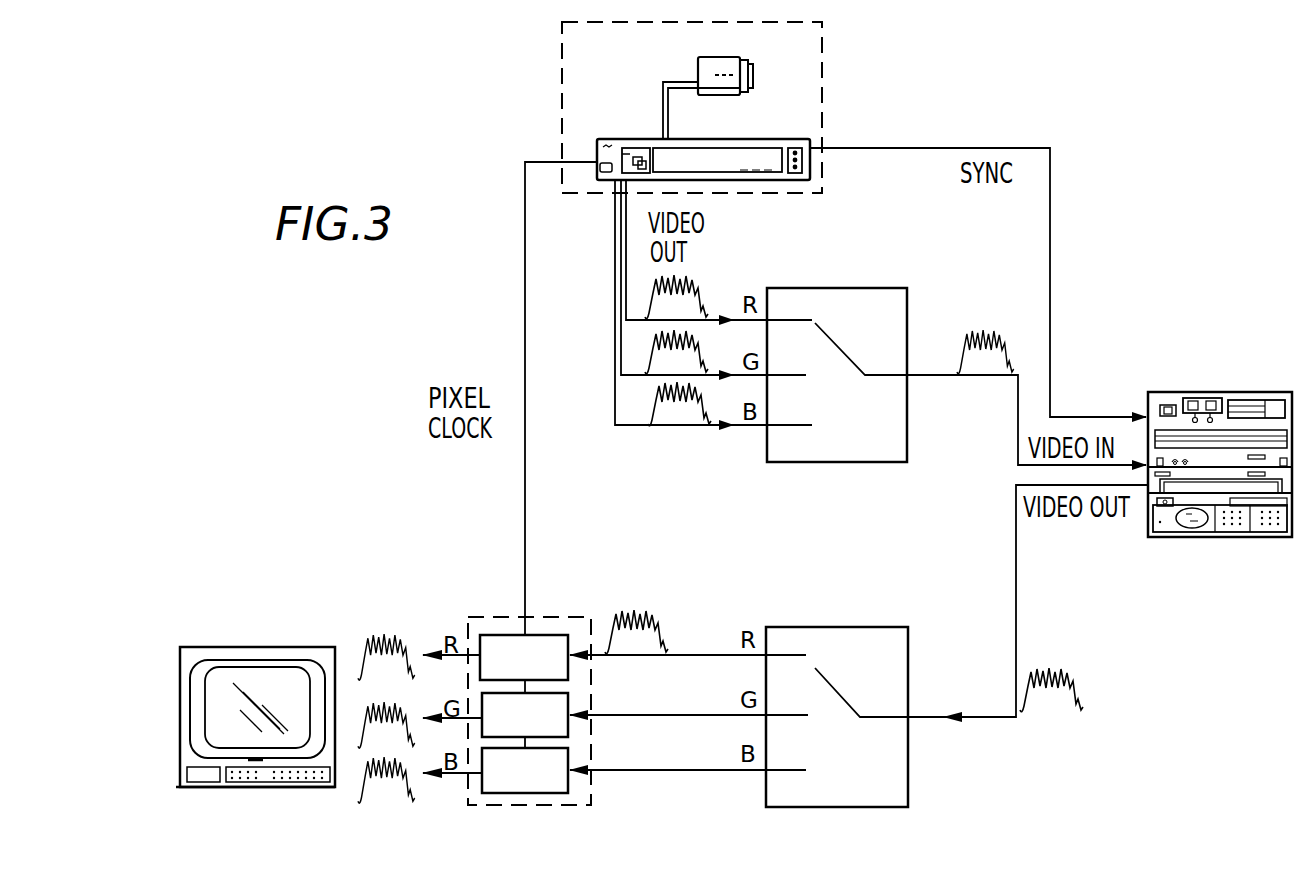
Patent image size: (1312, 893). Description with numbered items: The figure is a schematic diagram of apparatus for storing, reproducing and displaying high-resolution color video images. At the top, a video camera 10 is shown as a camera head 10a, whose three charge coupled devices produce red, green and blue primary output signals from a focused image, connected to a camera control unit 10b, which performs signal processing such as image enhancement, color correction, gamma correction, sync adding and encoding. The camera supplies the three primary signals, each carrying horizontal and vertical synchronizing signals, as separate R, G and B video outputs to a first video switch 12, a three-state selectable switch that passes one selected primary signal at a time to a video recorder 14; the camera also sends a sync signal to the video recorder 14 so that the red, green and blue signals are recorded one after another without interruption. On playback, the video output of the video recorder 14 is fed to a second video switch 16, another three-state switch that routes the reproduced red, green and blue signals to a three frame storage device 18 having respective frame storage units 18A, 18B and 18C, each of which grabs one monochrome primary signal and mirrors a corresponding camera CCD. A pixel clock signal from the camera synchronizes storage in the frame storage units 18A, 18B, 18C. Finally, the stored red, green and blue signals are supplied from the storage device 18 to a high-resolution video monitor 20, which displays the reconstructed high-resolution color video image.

The video camera 10 is at (822, 38).
The camera head 10a is at (712, 55).
The camera control unit 10b is at (728, 139).
The first video switch 12 is at (790, 288).
The video recorder 14 is at (1208, 392).
The second video switch 16 is at (823, 627).
The three frame storage device 18 is at (514, 749).
The frame storage unit 18A is at (524, 657).
The frame storage unit 18B is at (525, 715).
The frame storage unit 18C is at (478, 808).
The high-resolution video monitor 20 is at (274, 617).